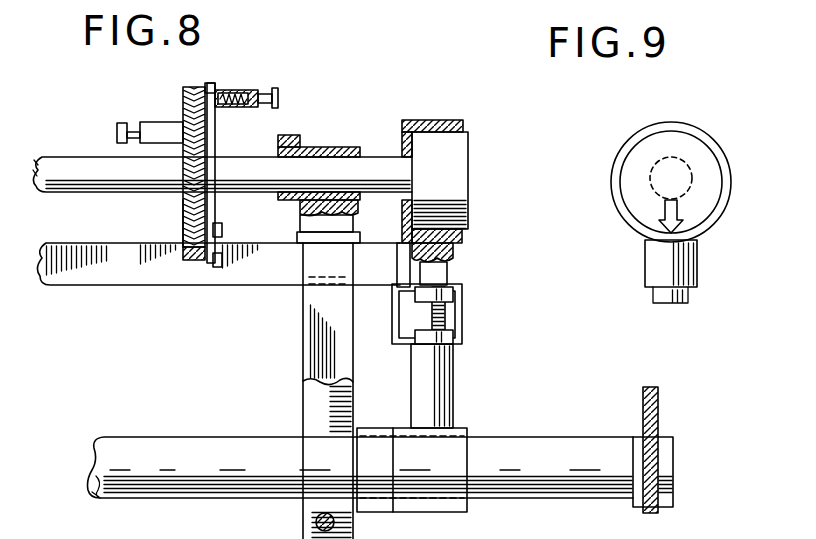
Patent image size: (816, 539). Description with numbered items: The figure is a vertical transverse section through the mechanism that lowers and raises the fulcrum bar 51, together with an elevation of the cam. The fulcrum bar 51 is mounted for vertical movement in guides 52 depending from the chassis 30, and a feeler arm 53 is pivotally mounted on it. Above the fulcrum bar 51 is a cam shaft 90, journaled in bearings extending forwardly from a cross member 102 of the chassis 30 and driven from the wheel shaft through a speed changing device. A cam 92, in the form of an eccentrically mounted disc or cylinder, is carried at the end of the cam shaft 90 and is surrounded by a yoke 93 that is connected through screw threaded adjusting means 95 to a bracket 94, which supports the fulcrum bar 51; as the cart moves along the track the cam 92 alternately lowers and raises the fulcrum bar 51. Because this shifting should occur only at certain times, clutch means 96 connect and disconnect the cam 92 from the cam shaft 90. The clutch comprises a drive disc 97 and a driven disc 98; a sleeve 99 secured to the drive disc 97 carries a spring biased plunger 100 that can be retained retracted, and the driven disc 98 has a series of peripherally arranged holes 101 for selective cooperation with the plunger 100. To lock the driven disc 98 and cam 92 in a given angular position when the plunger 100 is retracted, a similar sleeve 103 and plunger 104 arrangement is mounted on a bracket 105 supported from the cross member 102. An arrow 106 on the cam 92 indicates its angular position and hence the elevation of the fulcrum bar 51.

In FIG. 8, the chassis 30 is at (462, 292).
In FIG. 8, the fulcrum bar 51 is at (150, 428).
In FIG. 8, the guides 52 is at (318, 343).
In FIG. 8, the feeler arm 53 is at (656, 410).
In FIG. 8, the cam shaft 90 is at (56, 158).
In FIG. 9, the cam shaft 90 is at (652, 174).
In FIG. 8, the cam 92 is at (470, 147).
In FIG. 9, the cam 92 is at (706, 166).
In FIG. 8, the yoke 93 is at (435, 120).
In FIG. 9, the yoke 93 is at (700, 136).
In FIG. 8, the bracket 94 is at (446, 376).
In FIG. 8, the screw threaded adjusting means 95 is at (440, 326).
In FIG. 8, the clutch means 96 is at (184, 86).
In FIG. 8, the drive disc 97 is at (182, 212).
In FIG. 8, the driven disc 98 is at (212, 200).
In FIG. 8, the sleeve 99 is at (160, 112).
In FIG. 8, the spring biased plunger 100 is at (118, 123).
In FIG. 8, the holes 101 is at (190, 262).
In FIG. 8, the cross member 102 is at (98, 278).
In FIG. 8, the sleeve 103 is at (240, 90).
In FIG. 8, the plunger 104 is at (276, 92).
In FIG. 8, the bracket 105 is at (219, 268).
In FIG. 9, the arrow 106 is at (690, 212).